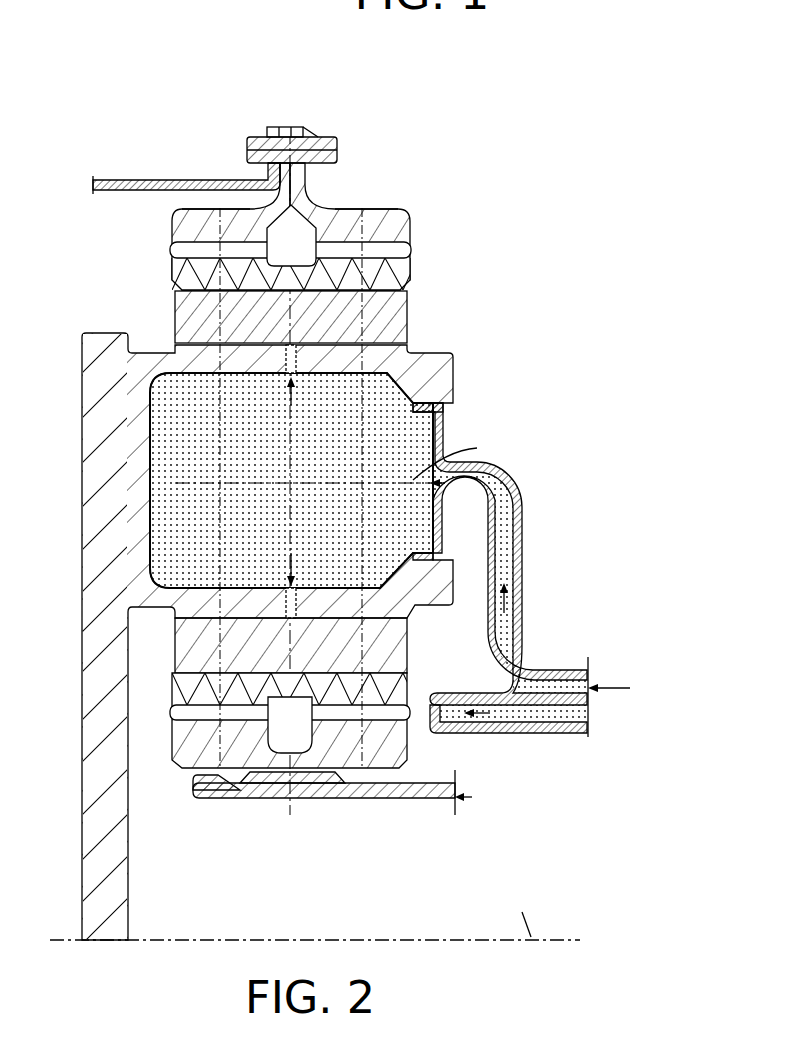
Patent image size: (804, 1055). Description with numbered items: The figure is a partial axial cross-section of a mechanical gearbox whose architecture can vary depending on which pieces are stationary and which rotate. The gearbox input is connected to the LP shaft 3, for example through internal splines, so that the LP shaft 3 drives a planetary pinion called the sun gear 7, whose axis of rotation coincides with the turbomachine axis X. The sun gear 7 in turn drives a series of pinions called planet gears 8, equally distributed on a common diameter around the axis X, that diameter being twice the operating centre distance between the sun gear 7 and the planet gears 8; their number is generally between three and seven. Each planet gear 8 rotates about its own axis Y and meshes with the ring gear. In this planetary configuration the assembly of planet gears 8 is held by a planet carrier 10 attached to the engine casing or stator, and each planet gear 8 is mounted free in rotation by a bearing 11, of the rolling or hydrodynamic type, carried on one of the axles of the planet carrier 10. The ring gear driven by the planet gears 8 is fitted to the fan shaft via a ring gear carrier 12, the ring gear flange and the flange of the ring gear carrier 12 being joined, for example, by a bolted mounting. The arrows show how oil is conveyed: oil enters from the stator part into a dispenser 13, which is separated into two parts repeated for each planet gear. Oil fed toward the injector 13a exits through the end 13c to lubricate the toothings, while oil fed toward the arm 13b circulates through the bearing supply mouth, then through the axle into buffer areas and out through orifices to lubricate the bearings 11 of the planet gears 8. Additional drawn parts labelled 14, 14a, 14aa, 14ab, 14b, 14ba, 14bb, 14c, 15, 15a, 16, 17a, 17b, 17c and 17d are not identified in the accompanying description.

The LP shaft 3 is at (410, 800).
The sun gear 7 is at (267, 777).
The planet gears 8 is at (400, 318).
The planet carrier 10 is at (549, 296).
The bearing 11 is at (178, 733).
The ring gear carrier 12 is at (178, 697).
The dispenser 13 is at (303, 656).
The injector 13a is at (440, 590).
The arm 13b is at (291, 480).
The end 13c is at (300, 358).
The clamp flange 14 is at (297, 145).
The first flange 14a is at (183, 225).
The first flange surface 14aa is at (197, 211).
The bolt head 14ab is at (285, 127).
The second flange 14b is at (396, 233).
The second flange surface 14ba is at (350, 215).
The nut 14bb is at (308, 100).
The fastener 14c is at (296, 81).
The bracket 15 is at (132, 180).
The bracket end 15a is at (272, 137).
The fluid inlet 16 is at (587, 631).
The horizontal pipe 17a is at (535, 735).
The vertical pipe 17b is at (516, 537).
The pipe mount 17c is at (479, 795).
The pipe flange 17d is at (443, 410).